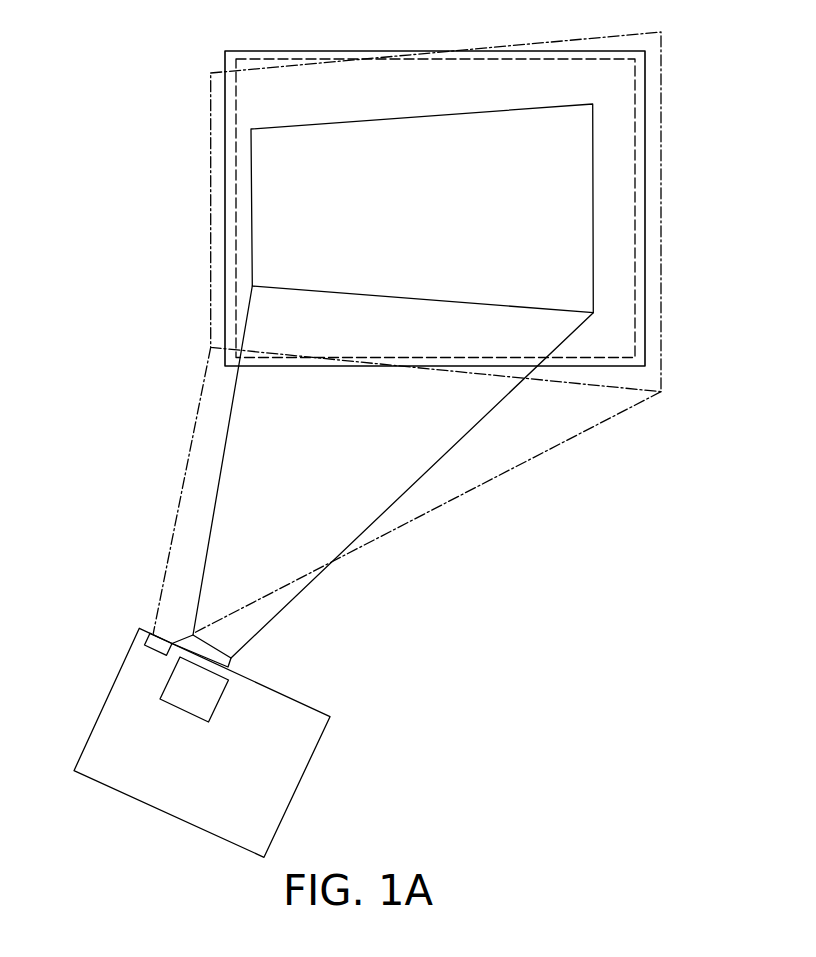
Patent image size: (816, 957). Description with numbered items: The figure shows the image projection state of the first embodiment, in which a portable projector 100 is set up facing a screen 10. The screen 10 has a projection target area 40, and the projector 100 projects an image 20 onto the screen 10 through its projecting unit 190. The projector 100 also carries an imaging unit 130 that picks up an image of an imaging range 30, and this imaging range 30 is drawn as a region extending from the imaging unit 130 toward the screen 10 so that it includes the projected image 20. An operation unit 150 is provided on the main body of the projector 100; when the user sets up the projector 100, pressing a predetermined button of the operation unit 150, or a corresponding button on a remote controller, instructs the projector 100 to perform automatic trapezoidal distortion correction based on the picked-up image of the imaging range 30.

The screen 10 is at (280, 50).
The image 20 is at (500, 112).
The imaging range 30 is at (646, 27).
The projection target area 40 is at (238, 59).
The projector 100 is at (325, 712).
The imaging unit 130 is at (156, 656).
The operation unit 150 is at (213, 713).
The projecting unit 190 is at (230, 662).